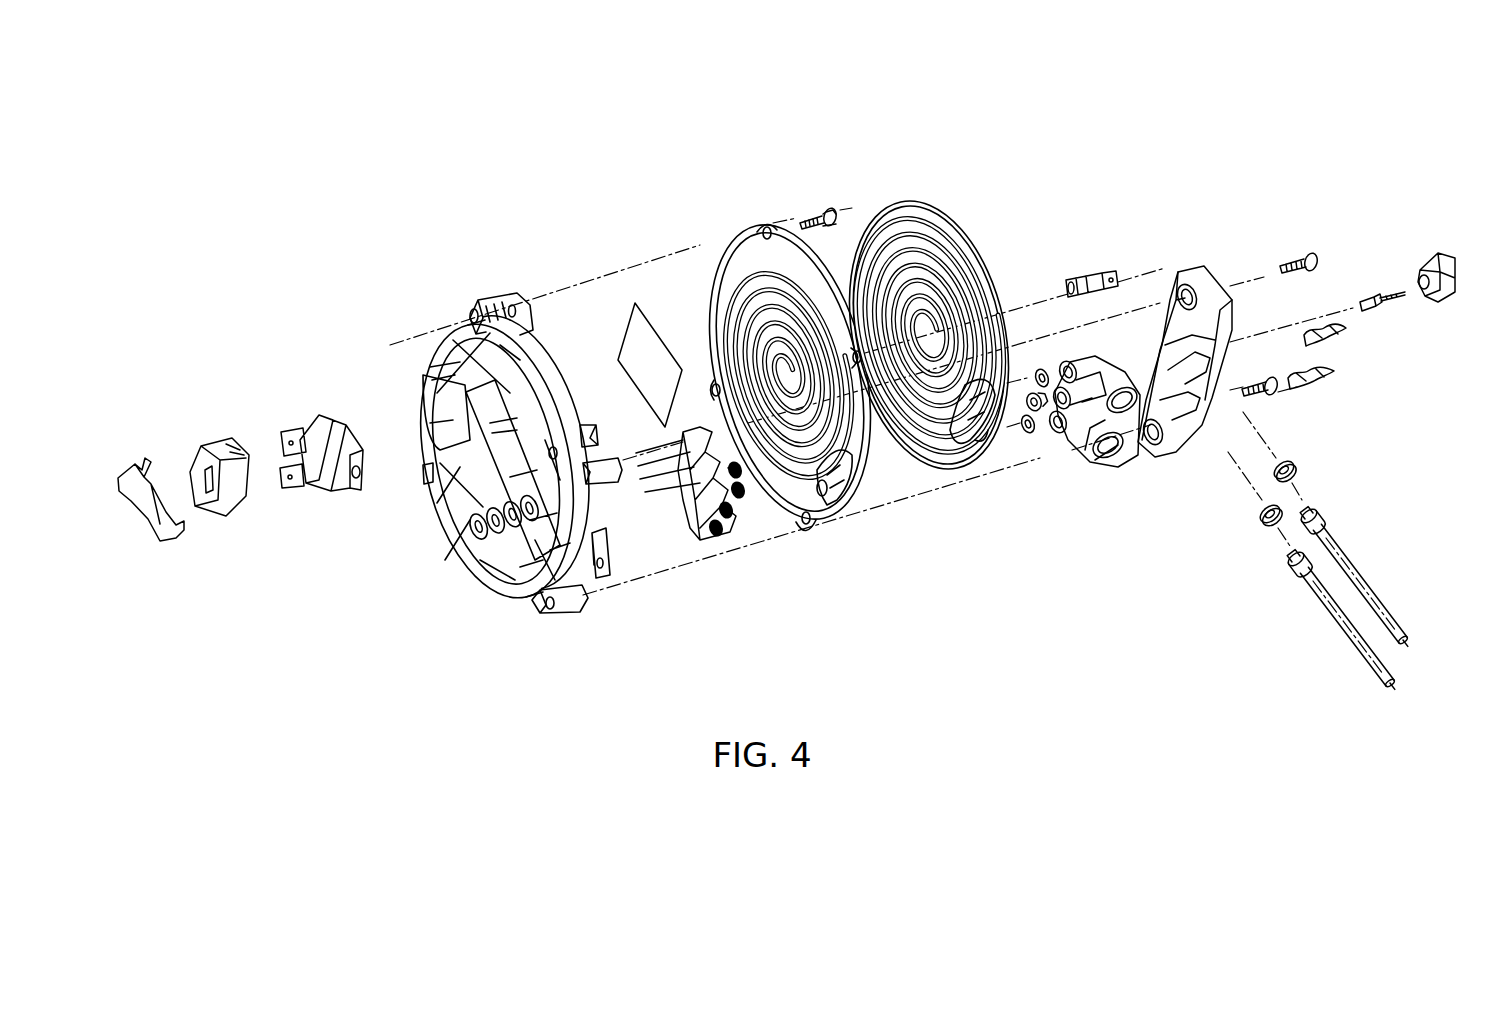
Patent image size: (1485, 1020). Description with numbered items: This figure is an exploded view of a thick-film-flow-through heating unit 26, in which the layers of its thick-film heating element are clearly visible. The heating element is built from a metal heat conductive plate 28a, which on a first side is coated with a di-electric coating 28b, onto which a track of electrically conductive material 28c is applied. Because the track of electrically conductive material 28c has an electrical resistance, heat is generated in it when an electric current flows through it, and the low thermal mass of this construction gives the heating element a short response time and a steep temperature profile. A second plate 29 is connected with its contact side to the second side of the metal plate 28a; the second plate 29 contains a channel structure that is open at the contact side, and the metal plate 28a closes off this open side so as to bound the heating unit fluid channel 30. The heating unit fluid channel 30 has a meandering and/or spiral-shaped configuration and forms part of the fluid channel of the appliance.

The thick-film-flow-through heating unit 26 is at (483, 190).
The metal heat conductive plate 28a is at (706, 274).
The di-electric coating 28b is at (828, 508).
The track of electrically conductive material 28c is at (740, 262).
The second plate 29 is at (887, 190).
The heating unit fluid channel 30 is at (957, 445).